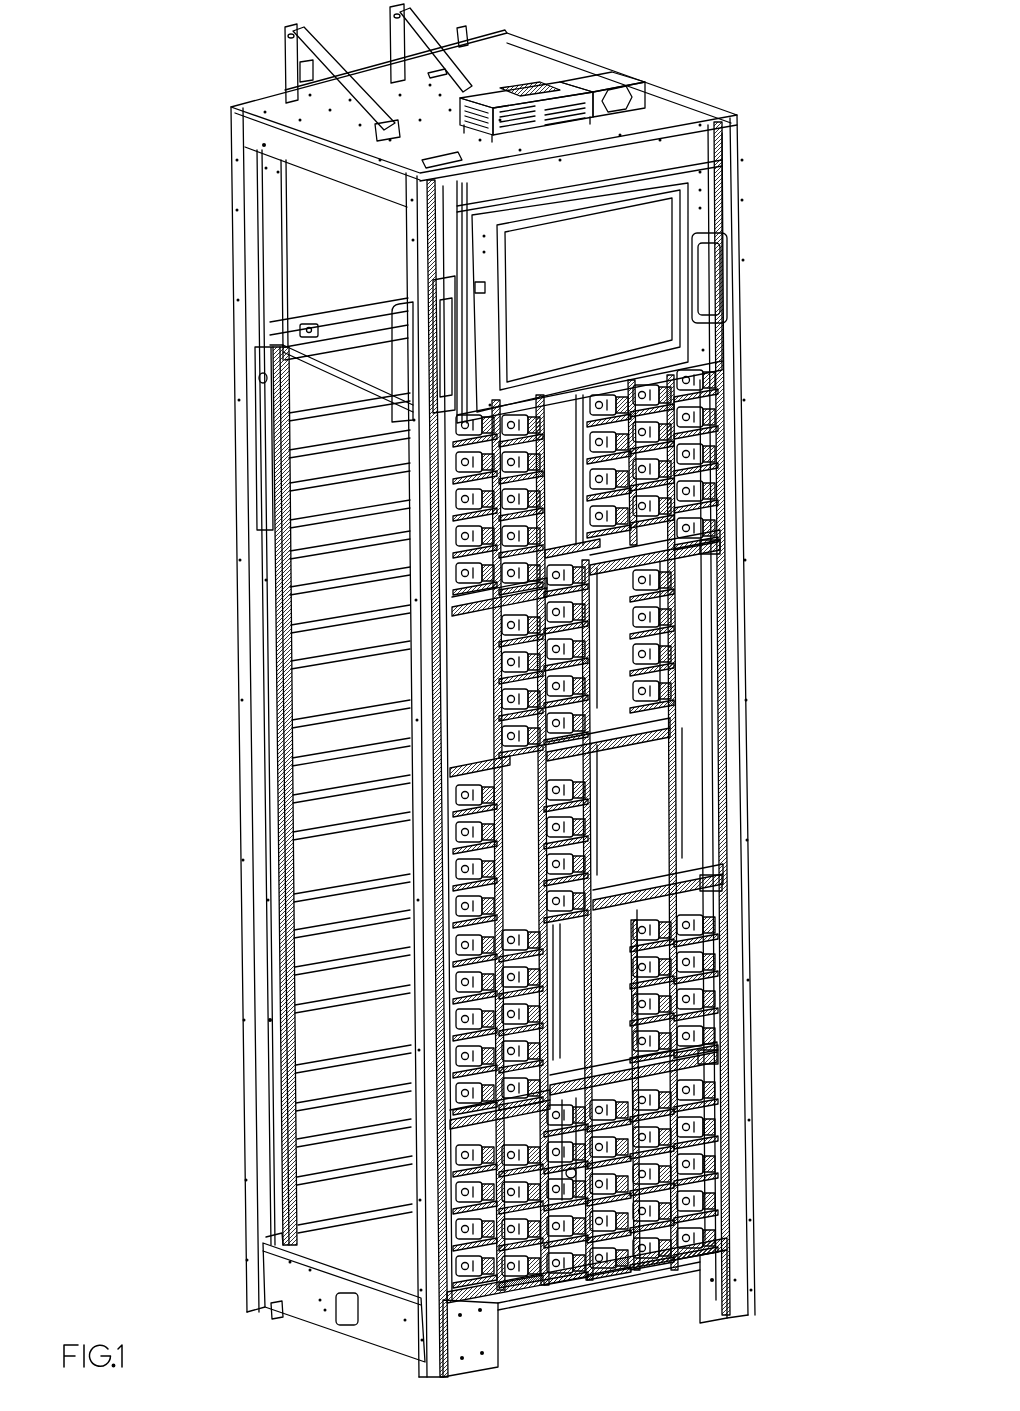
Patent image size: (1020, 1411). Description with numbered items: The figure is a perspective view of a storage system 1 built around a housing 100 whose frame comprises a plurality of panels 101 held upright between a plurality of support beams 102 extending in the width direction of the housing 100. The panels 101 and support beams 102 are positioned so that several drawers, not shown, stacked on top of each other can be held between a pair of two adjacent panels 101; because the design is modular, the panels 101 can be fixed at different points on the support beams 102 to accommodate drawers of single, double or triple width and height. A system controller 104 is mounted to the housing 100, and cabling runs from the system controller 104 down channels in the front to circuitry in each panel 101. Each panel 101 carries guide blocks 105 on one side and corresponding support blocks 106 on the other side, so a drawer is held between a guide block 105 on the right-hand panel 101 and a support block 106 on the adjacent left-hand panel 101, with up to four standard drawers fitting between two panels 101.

The storage system 1 is at (748, 78).
The housing 100 is at (757, 838).
The panel 101 is at (691, 1007).
The support beam 102 is at (725, 890).
The system controller 104 is at (587, 110).
The guide block 105 is at (691, 1197).
The support block 106 is at (691, 1160).